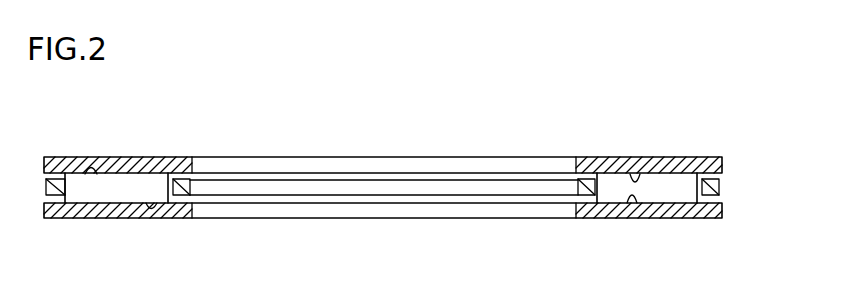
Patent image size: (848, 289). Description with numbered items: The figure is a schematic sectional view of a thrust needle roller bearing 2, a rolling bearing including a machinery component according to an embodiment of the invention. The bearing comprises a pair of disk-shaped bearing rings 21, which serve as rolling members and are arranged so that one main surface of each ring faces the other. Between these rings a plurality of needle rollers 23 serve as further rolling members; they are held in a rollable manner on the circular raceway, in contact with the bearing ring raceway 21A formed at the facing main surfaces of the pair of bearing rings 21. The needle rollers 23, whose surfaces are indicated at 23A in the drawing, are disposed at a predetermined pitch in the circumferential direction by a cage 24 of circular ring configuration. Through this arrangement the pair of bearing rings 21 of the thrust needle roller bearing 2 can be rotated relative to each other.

The thrust needle roller bearing 2 is at (714, 97).
The bearing ring 21 is at (608, 168).
The bearing ring raceway 21A is at (640, 176).
The needle roller 23 is at (113, 187).
The cavity wall surface 23A is at (151, 201).
The cage 24 is at (237, 188).